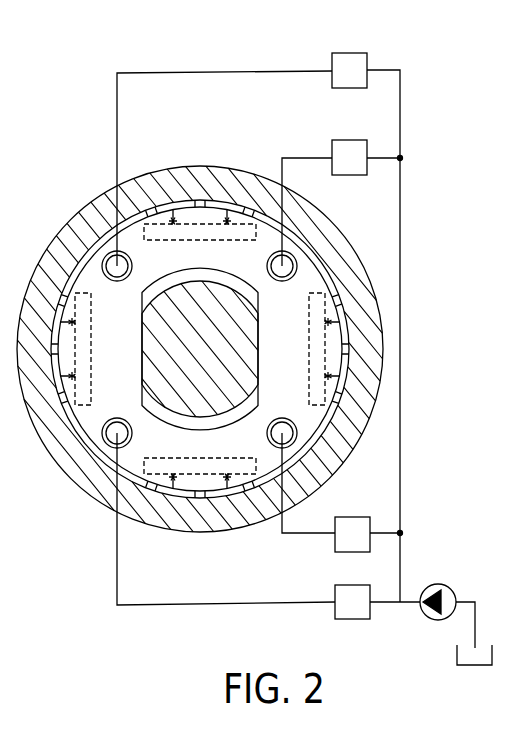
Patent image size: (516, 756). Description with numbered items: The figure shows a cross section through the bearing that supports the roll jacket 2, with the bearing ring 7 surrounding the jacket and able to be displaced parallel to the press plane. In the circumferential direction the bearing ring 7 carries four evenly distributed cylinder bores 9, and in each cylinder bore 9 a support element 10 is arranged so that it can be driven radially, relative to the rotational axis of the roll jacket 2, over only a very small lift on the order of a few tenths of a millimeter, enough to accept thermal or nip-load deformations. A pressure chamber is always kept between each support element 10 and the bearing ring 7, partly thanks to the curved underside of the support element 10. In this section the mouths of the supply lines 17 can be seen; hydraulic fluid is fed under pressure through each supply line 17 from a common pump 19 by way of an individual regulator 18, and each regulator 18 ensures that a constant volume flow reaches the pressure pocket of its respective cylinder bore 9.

The roll jacket 2 is at (323, 229).
The bearing ring 7 is at (315, 278).
The cylinder bore 9 is at (152, 241).
The support element 10 is at (215, 204).
The supply line 17 is at (107, 262).
The regulator 18 is at (355, 63).
The pump 19 is at (438, 591).